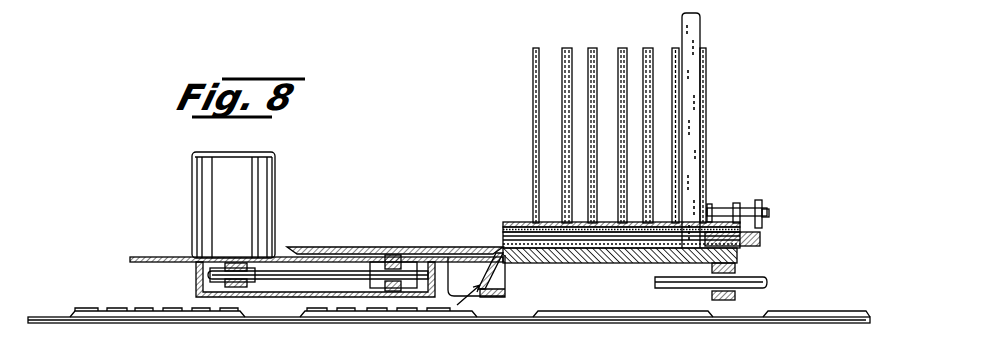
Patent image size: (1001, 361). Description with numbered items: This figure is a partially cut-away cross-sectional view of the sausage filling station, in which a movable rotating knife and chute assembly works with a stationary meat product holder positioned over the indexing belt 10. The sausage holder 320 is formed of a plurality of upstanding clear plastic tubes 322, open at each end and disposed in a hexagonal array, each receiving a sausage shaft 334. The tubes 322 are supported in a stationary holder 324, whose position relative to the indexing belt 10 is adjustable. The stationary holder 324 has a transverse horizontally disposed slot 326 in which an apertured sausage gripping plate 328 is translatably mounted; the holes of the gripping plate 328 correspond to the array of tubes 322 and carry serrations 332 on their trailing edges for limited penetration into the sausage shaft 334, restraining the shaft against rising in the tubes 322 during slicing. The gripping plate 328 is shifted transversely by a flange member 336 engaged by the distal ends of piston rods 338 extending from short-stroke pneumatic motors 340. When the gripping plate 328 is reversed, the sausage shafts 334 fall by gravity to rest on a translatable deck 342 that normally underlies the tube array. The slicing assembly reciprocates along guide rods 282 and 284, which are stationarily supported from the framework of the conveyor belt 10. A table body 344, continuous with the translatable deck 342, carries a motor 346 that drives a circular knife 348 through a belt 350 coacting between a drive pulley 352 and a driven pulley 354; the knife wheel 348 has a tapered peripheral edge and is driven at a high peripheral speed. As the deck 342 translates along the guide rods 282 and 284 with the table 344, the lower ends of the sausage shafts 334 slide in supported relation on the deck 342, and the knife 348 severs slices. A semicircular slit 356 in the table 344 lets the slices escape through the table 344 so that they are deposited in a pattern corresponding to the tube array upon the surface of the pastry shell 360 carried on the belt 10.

The indexing belt 10 is at (737, 325).
The guide rod 282 is at (107, 5).
The guide rod 284 is at (768, 278).
The sausage holder 320 is at (717, 86).
The tubes 322 is at (615, 48).
The stationary holder 324 is at (523, 222).
The slot 326 is at (503, 229).
The sausage gripping plate 328 is at (746, 238).
The serrations 332 is at (660, 244).
The sausage shaft 334 is at (700, 18).
The flange member 336 is at (767, 226).
The piston rods 338 is at (753, 210).
The pneumatic motors 340 is at (723, 206).
The translatable deck 342 is at (572, 263).
The table body 344 is at (166, 256).
The motor 346 is at (278, 163).
The circular knife 348 is at (362, 246).
The belt 350 is at (278, 272).
The drive pulley 352 is at (248, 293).
The driven pulley 354 is at (371, 285).
The slit 356 is at (503, 241).
The pastry shell 360 is at (628, 313).